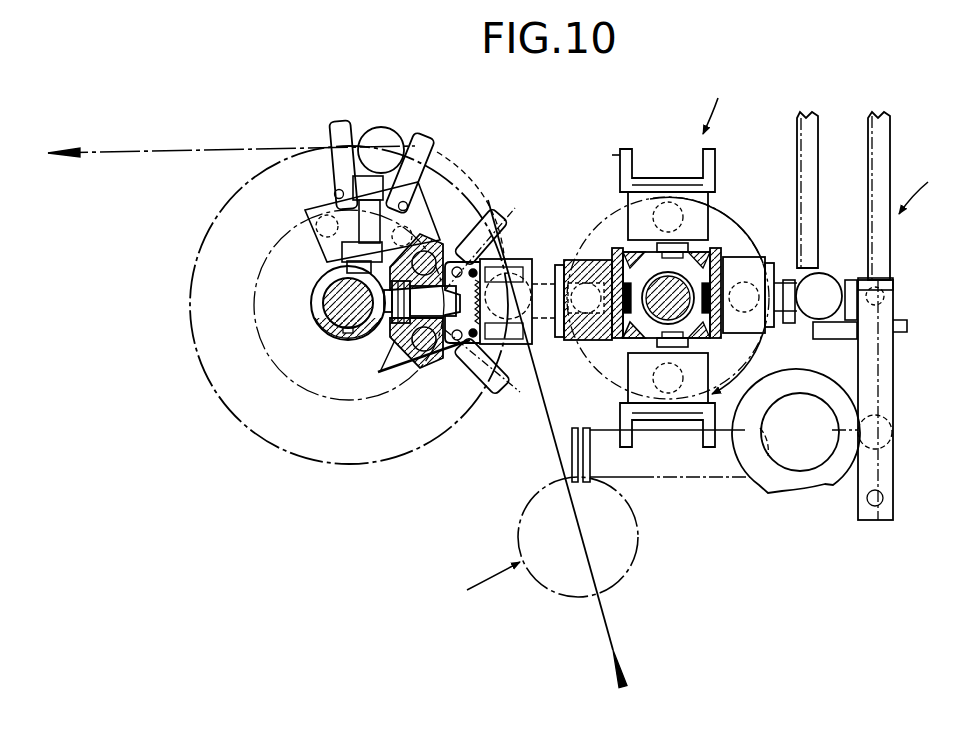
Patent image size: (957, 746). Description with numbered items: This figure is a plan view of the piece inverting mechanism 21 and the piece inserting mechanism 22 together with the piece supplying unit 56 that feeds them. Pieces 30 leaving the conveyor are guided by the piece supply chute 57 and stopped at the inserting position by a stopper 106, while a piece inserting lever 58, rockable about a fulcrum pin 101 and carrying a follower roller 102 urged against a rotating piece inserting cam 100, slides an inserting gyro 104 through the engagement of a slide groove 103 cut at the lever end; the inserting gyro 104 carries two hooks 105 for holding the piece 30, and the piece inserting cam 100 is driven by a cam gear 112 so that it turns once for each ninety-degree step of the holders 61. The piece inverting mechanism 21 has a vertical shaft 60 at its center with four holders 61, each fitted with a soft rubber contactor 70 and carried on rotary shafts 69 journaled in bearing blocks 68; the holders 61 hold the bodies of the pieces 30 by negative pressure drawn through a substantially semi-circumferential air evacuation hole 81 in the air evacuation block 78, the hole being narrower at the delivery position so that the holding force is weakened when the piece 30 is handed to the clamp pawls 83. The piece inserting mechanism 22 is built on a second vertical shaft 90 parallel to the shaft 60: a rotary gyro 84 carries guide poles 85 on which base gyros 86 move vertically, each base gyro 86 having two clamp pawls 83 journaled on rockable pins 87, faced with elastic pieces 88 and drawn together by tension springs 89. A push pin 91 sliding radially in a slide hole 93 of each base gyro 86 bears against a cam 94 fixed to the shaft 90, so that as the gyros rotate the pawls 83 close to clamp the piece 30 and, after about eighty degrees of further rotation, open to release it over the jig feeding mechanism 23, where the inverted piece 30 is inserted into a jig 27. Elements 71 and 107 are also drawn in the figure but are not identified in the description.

The piece inverting mechanism 21 is at (728, 106).
The piece inserting mechanism 22 is at (245, 432).
The jig feeding mechanism 23 is at (604, 628).
The jig 27 is at (537, 543).
The piece 30 is at (389, 128).
The piece supplying unit 56 is at (877, 190).
The piece supply chute 57 is at (891, 142).
The piece inserting lever 58 is at (893, 375).
The vertical shaft 60 is at (623, 378).
The holder 61 is at (623, 150).
The bearing block 68 is at (713, 218).
The rotary shaft 69 is at (580, 280).
The contactor 70 is at (660, 165).
The corner cap 71 is at (613, 350).
The air evacuation block 78 is at (596, 212).
The air evacuation hole 81 is at (759, 338).
The clamp pawl 83 is at (341, 120).
The rotary gyro 84 is at (266, 358).
The guide pole 85 is at (322, 234).
The base gyro 86 is at (316, 216).
The rockable pin 87 is at (334, 192).
The elastic piece 88 is at (531, 262).
The tension spring 89 is at (466, 232).
The vertical shaft 90 is at (335, 296).
The push pin 91 is at (400, 325).
The slide hole 93 is at (420, 340).
The cam 94 is at (327, 310).
The piece inserting cam 100 is at (802, 494).
The fulcrum pin 101 is at (877, 506).
The follower roller 102 is at (884, 432).
The slide groove 103 is at (886, 292).
The inserting gyro 104 is at (896, 282).
The hook 105 is at (790, 280).
The stopper 106 is at (843, 339).
The notch 107 is at (906, 322).
The cam gear 112 is at (822, 472).